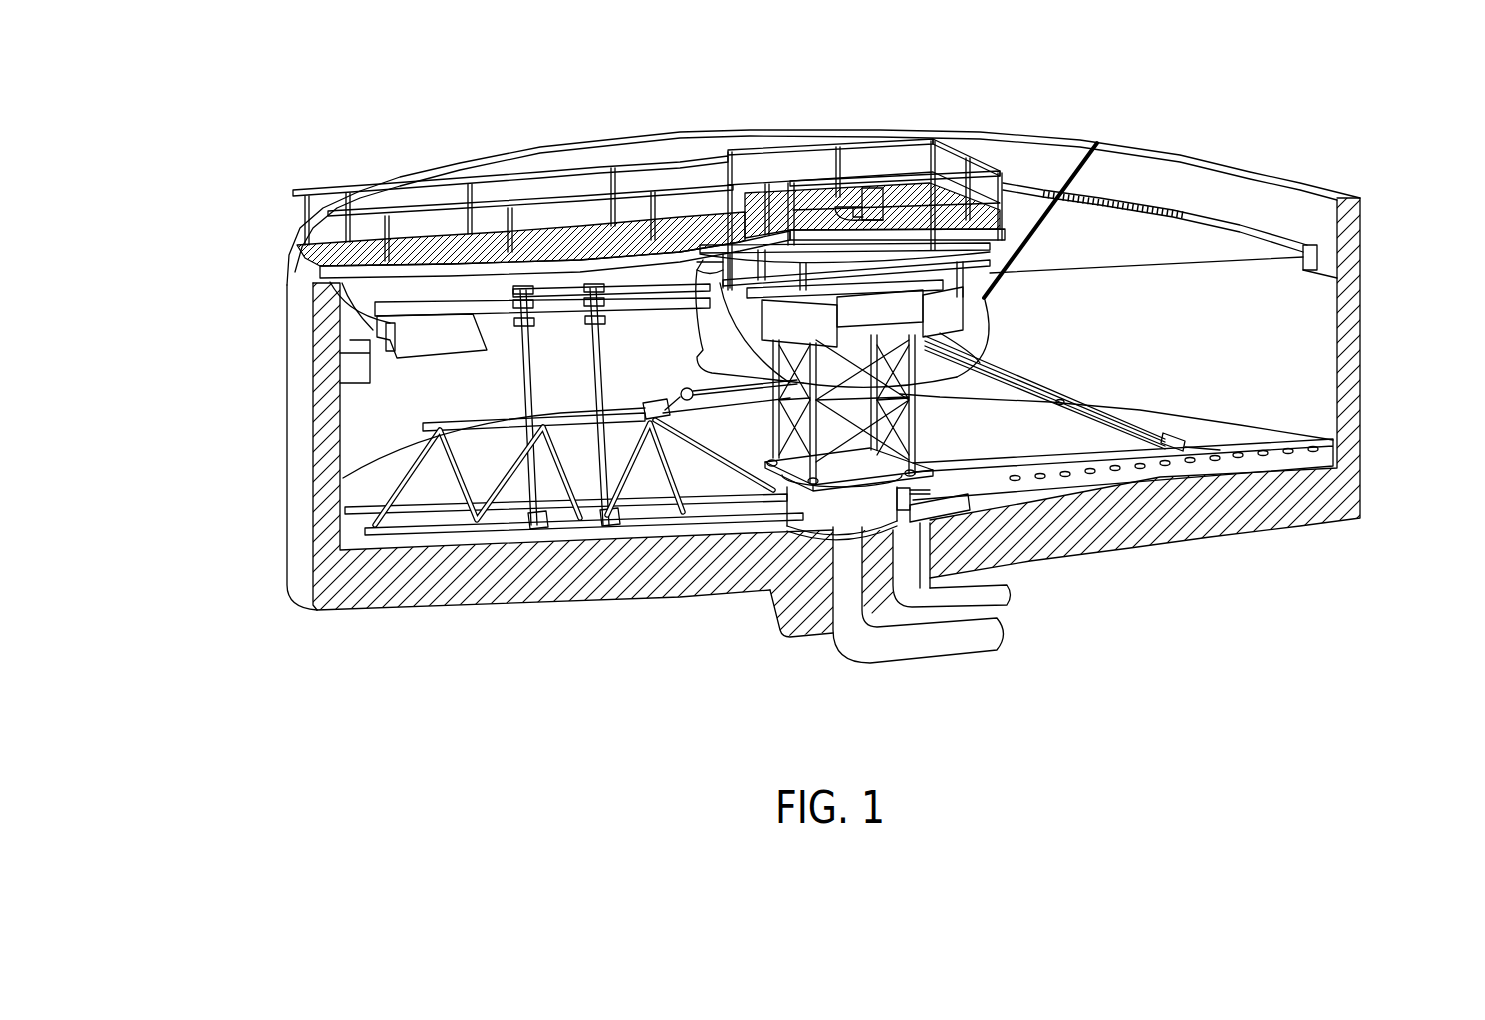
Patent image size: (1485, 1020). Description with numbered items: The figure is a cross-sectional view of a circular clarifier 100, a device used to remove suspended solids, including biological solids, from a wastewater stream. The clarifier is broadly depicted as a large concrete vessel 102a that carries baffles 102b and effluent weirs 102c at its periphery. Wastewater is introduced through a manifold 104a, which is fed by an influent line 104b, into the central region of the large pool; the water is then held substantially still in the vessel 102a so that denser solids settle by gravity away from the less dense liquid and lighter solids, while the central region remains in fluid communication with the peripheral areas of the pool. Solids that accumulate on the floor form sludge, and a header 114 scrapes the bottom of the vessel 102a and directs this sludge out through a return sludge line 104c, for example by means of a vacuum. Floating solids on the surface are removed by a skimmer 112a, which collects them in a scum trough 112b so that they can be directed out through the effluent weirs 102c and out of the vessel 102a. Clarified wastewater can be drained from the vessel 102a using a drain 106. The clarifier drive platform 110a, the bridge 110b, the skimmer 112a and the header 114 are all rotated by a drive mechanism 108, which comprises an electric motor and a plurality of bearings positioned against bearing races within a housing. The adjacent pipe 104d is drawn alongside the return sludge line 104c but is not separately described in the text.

The clarifier 100 is at (252, 113).
The vessel 102a is at (1353, 363).
The baffles 102b is at (1275, 243).
The effluent weirs 102c is at (1140, 200).
The manifold 104a is at (770, 597).
The influent line 104b is at (873, 650).
The return sludge line 104c is at (985, 625).
The drain pipe 104d is at (918, 480).
The drain 106 is at (847, 440).
The drive mechanism 108 is at (878, 185).
The clarifier drive platform 110a is at (935, 175).
The bridge 110b is at (560, 163).
The skimmer 112a is at (443, 303).
The scum trough 112b is at (318, 373).
The header 114 is at (1293, 463).